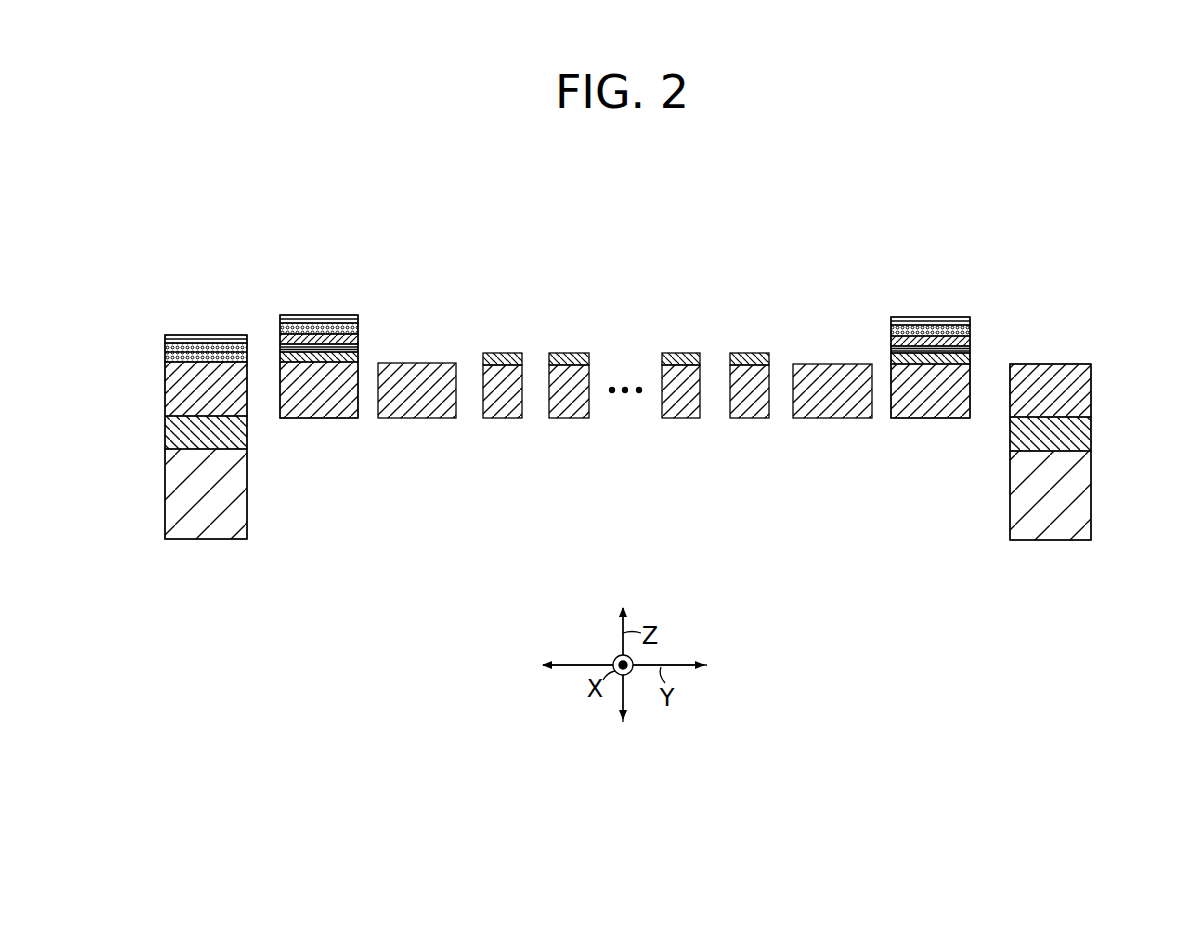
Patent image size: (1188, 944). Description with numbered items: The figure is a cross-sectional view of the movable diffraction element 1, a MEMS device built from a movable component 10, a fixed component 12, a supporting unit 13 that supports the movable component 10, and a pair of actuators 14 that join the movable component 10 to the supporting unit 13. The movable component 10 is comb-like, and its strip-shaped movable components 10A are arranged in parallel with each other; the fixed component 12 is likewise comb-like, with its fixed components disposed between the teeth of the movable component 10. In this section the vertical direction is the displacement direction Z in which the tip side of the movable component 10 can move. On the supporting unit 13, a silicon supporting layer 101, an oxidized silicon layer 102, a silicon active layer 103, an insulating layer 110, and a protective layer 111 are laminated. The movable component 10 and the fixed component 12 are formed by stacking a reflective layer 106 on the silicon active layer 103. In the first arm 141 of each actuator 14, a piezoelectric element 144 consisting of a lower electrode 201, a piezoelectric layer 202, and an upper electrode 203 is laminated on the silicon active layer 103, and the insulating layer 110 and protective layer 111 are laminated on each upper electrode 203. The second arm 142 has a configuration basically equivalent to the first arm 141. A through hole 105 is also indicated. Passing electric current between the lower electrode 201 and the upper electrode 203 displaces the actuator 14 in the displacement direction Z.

The movable diffraction element 1 is at (1108, 277).
The movable component 10 is at (495, 305).
The strip-shaped movable component 10A is at (543, 332).
The fixed component 12 is at (550, 440).
The supporting unit 13 is at (165, 548).
The actuator 14 is at (458, 510).
The silicon supporting layer 101 is at (172, 494).
The oxidized silicon layer 102 is at (172, 434).
The silicon active layer 103 is at (173, 389).
The through hole 105 is at (608, 528).
The reflective layer 106 is at (550, 353).
The insulating layer 110 is at (168, 347).
The protective layer 111 is at (175, 338).
The first arm 141 is at (310, 280).
The second arm 142 is at (377, 423).
The piezoelectric element 144 is at (430, 293).
The lower electrode 201 is at (360, 358).
The piezoelectric layer 202 is at (360, 348).
The upper electrode 203 is at (360, 338).